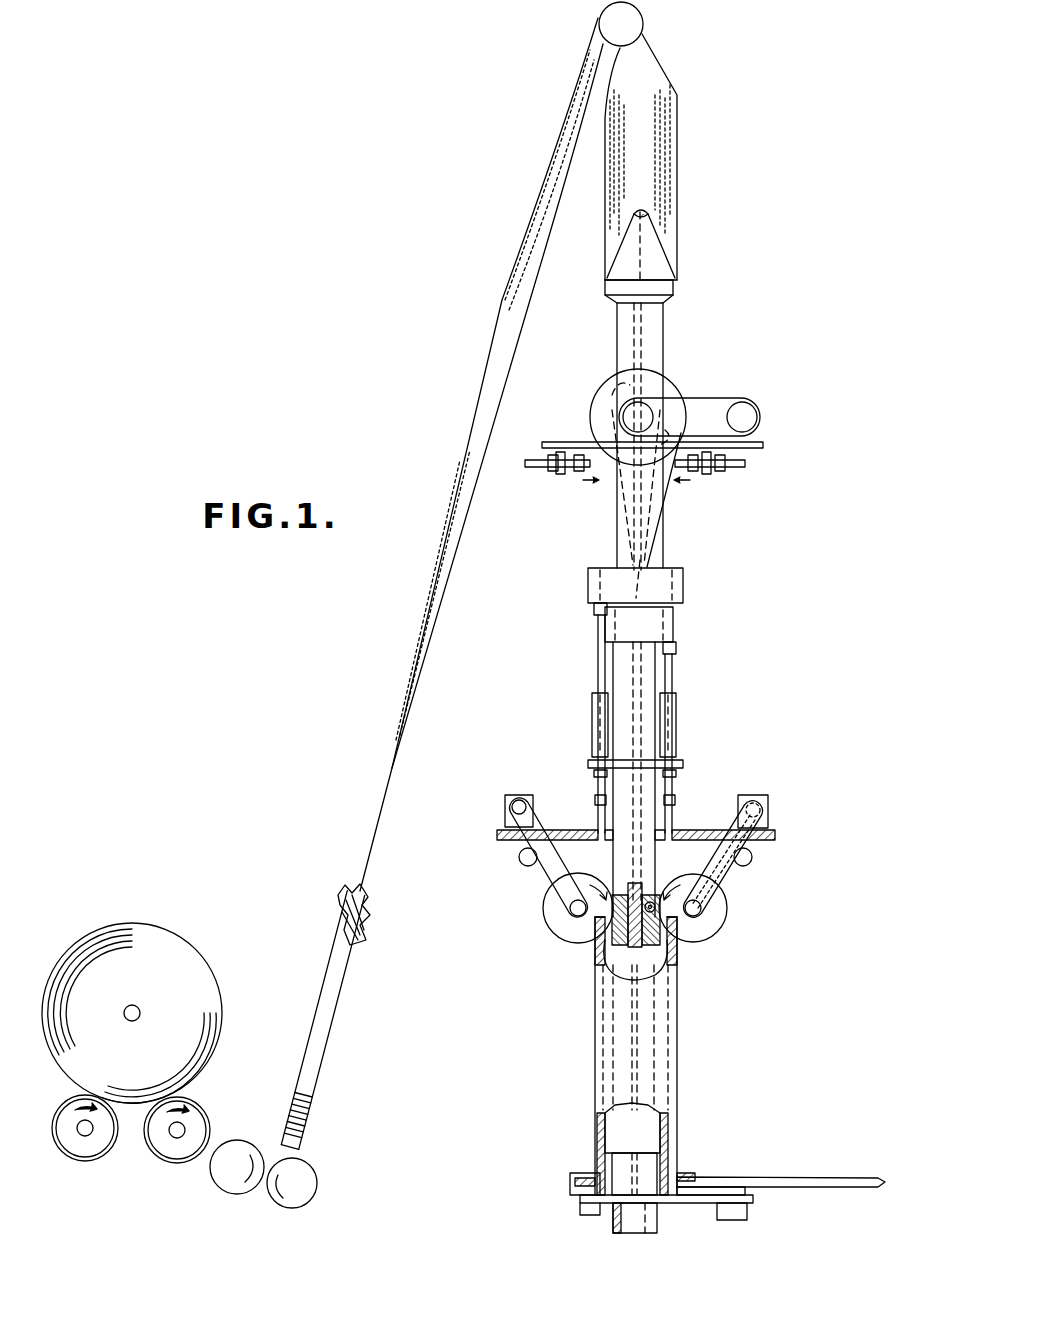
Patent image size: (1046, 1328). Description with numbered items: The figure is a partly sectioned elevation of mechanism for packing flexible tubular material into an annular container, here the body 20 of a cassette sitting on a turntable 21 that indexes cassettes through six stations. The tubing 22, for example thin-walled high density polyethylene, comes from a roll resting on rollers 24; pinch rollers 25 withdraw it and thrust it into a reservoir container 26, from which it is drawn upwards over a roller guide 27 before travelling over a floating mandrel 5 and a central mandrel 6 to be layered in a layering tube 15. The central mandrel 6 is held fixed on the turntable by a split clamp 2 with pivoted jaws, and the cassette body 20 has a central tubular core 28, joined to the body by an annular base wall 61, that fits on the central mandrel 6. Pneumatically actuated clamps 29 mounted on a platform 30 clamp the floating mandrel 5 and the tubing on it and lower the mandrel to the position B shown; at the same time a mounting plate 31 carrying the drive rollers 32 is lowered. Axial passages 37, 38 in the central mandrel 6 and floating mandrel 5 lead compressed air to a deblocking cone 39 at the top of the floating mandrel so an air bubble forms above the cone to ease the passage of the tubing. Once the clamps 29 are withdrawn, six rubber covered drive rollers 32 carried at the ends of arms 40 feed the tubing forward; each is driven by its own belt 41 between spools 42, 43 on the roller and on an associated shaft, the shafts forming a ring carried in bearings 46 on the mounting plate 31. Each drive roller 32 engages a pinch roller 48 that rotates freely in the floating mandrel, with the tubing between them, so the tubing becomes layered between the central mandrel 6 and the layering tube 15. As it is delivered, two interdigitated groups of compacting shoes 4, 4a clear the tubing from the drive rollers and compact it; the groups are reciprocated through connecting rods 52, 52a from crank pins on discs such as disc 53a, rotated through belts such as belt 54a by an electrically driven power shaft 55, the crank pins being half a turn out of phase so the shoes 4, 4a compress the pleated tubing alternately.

The split clamp 2 is at (657, 1212).
The compacting shoes 4 is at (665, 950).
The compacting shoes 4a is at (605, 945).
The floating mandrel 5 is at (655, 355).
The central mandrel 6 is at (645, 1132).
The layering tube 15 is at (677, 1023).
The body 20 is at (597, 1162).
The turntable 21 is at (798, 1177).
The tubing 22 is at (655, 180).
The rollers 24 is at (150, 1145).
The pinch rollers 25 is at (230, 1185).
The reservoir container 26 is at (325, 1022).
The roller guide 27 is at (628, 18).
The central tubular core 28 is at (655, 1168).
The clamps 29 is at (578, 470).
The platform 30 is at (765, 446).
The mounting plate 31 is at (695, 830).
The drive rollers 32 is at (548, 912).
The axial passage 37 is at (632, 1023).
The axial passage 38 is at (675, 338).
The deblocking cone 39 is at (650, 250).
The arms 40 is at (519, 857).
The belt 41 is at (545, 870).
The spool 42 is at (575, 935).
The spool 43 is at (505, 800).
The bearings 46 is at (520, 795).
The pinch rollers 48 is at (635, 885).
The connecting rod 52 is at (620, 510).
The connecting rod 52a is at (663, 517).
The disc 53a is at (667, 390).
The belt 54a is at (727, 398).
The power driven shaft 55 is at (742, 420).
The annular base wall 61 is at (600, 1203).
The lowered position B is at (612, 327).